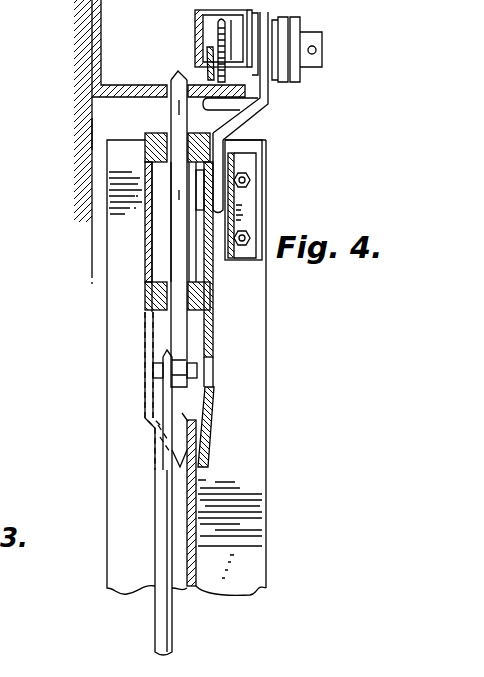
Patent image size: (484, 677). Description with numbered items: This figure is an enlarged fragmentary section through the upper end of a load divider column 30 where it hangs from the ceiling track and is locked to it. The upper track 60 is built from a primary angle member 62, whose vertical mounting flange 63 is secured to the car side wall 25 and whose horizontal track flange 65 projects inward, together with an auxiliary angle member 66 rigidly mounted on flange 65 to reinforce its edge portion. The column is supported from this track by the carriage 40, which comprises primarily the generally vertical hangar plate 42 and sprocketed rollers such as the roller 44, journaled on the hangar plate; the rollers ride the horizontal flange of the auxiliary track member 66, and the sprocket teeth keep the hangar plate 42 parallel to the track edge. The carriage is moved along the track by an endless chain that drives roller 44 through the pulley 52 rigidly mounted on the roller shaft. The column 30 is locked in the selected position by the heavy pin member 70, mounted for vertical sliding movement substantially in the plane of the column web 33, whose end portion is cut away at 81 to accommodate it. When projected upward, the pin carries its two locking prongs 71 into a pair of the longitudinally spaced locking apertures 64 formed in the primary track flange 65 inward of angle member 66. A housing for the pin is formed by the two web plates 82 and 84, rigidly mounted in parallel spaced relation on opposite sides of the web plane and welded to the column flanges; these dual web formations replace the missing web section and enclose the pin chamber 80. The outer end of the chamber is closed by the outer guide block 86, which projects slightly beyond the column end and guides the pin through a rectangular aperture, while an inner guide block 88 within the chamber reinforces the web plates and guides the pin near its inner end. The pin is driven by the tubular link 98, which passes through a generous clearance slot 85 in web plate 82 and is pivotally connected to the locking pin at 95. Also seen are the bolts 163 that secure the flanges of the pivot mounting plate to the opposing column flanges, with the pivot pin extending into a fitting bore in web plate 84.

The car side wall 25 is at (97, 121).
The column 30 is at (276, 450).
The web 33 is at (212, 546).
The carriage 40 is at (322, 107).
The hangar plate 42 is at (258, 124).
The sprocketed roller 44 is at (242, 10).
The pulley 52 is at (300, 77).
The upper track 60 is at (106, 42).
The primary angle member 62 is at (86, 70).
The vertical mounting flange 63 is at (87, 24).
The locking apertures 64 is at (173, 80).
The horizontal track flange 65 is at (230, 91).
The auxiliary angle member 66 is at (208, 50).
The pin member 70 is at (196, 345).
The locking prongs 71 is at (173, 103).
The pin chamber 80 is at (205, 300).
The cut-away portion of web 81 is at (185, 418).
The web plate 82 is at (138, 202).
The web plate 84 is at (215, 280).
The clearance slots 85 is at (143, 398).
The outer guide block 86 is at (148, 158).
The inner guide block 88 is at (145, 302).
The pivotal connection 95 is at (157, 358).
The tubular link 98 is at (160, 538).
The bolts 163 is at (252, 232).